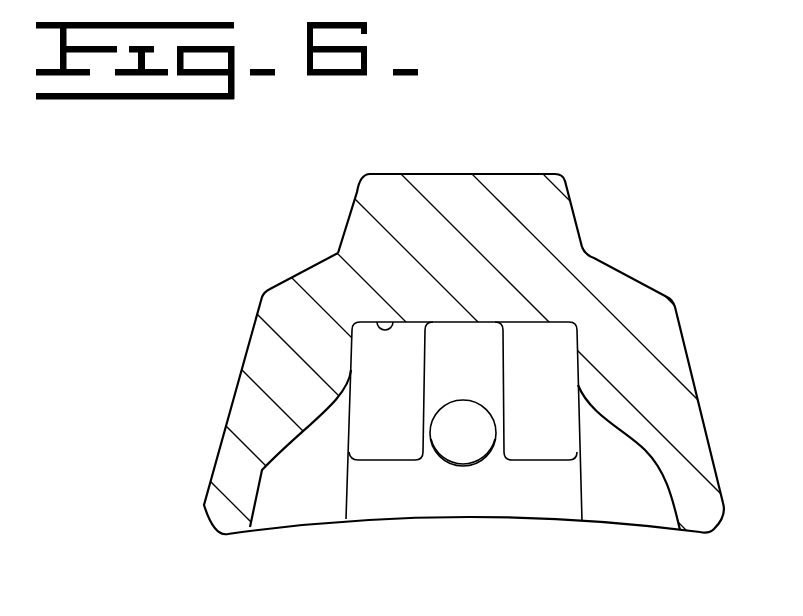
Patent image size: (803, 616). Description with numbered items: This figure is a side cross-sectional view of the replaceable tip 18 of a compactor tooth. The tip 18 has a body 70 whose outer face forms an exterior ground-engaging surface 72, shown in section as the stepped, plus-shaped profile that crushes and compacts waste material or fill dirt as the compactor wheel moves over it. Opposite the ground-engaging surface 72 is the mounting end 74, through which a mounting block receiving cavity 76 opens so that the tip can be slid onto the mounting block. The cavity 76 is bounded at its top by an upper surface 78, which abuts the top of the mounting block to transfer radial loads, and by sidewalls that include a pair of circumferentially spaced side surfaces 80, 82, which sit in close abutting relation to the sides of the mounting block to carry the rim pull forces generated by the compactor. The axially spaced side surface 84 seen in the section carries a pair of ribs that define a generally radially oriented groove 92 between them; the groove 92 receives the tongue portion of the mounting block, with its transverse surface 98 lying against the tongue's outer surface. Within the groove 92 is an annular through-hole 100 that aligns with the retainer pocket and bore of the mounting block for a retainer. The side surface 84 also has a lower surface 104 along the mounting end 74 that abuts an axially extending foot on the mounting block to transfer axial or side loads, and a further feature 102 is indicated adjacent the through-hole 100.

The replaceable tip 18 is at (586, 139).
The body 70 is at (292, 298).
The exterior ground-engaging surface 72 is at (345, 227).
The mounting end 74 is at (661, 536).
The mounting block receiving cavity 76 is at (468, 505).
The upper surface 78 is at (380, 320).
The circumferentially spaced side surface 80 is at (347, 498).
The circumferentially spaced side surface 82 is at (576, 511).
The axially spaced side surface 84 is at (557, 501).
The groove 92 is at (483, 347).
The transverse surface 98 is at (461, 357).
The annular through-hole 100 is at (480, 448).
The arcuate surface of circular member 102 is at (443, 417).
The lower surface 104 is at (430, 501).